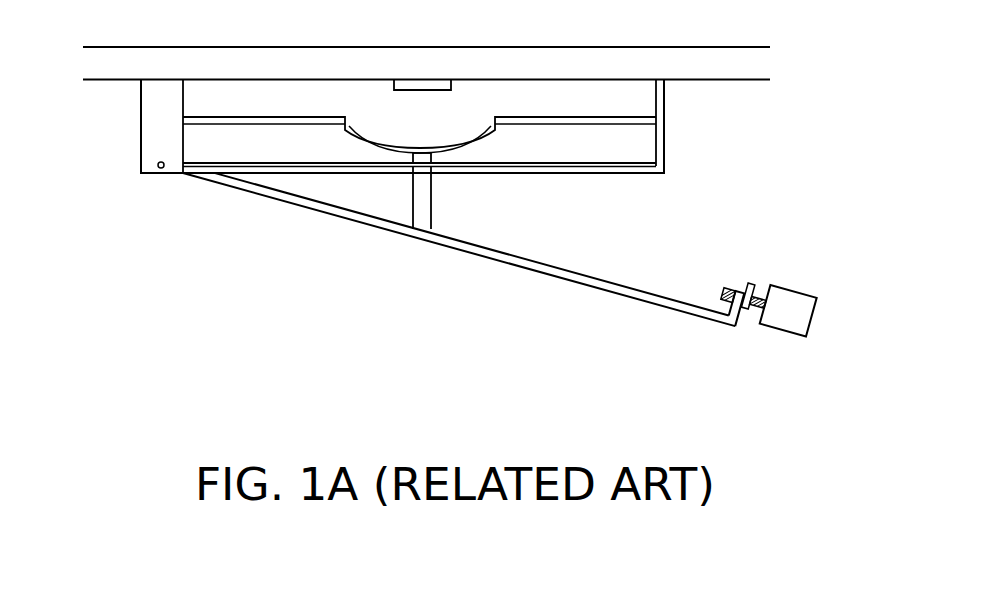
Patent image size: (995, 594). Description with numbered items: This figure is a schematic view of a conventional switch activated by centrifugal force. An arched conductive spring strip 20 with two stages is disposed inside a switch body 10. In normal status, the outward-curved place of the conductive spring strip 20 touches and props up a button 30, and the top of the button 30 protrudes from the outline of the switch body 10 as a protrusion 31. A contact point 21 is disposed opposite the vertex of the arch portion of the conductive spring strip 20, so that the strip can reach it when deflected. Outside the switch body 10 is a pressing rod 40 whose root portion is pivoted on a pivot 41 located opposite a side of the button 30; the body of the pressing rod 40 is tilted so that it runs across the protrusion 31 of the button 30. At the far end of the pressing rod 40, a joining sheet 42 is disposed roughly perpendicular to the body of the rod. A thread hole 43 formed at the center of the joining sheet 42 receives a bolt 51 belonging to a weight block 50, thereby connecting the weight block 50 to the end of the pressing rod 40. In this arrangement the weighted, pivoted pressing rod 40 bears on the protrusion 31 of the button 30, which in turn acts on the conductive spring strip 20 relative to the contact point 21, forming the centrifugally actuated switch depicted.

The switch body 10 is at (148, 115).
The conductive spring strip 20 is at (226, 119).
The contact point 21 is at (425, 84).
The button 30 is at (433, 157).
The protrusion 31 is at (428, 214).
The pressing rod 40 is at (262, 197).
The pivot 41 is at (161, 170).
The joining sheet 42 is at (745, 322).
The thread hole 43 is at (748, 288).
The weight block 50 is at (795, 300).
The bolt 51 is at (731, 297).